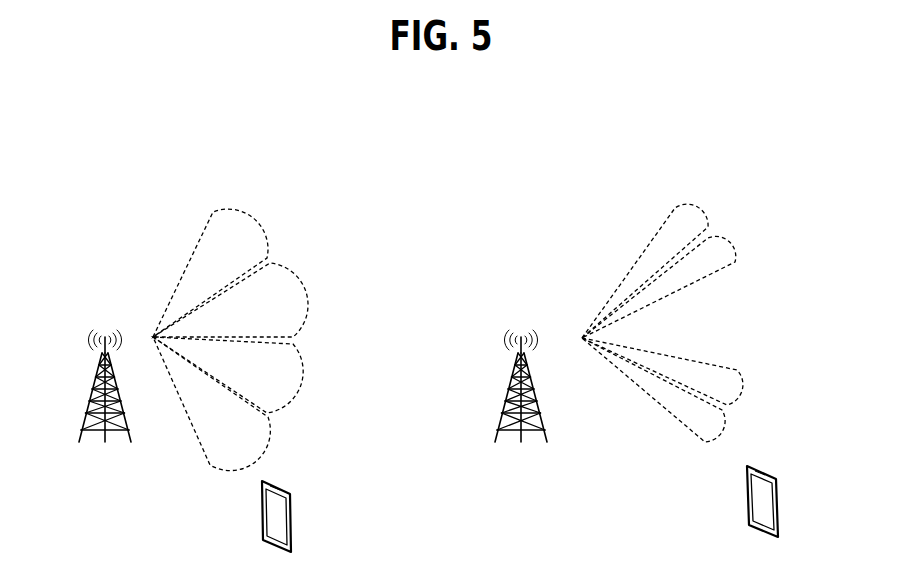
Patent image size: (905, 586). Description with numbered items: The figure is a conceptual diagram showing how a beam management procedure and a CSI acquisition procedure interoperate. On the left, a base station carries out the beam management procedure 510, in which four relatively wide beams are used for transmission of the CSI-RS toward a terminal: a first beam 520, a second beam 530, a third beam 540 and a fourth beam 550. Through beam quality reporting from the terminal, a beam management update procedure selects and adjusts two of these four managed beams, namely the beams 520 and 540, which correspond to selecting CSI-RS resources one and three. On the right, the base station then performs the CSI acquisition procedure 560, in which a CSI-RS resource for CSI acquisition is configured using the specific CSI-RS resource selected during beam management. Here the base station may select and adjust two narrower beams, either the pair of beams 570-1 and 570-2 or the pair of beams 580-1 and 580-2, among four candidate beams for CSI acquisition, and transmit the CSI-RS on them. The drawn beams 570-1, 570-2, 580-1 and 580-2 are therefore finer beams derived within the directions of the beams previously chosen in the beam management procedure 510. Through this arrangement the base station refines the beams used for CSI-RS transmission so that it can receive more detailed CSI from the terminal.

The beam management procedure 510 is at (38, 158).
The first beam 520 is at (247, 227).
The second beam 530 is at (292, 295).
The third beam 540 is at (292, 383).
The fourth beam 550 is at (257, 448).
The CSI acquisition procedure 560 is at (783, 157).
The first CSI acquisition beam 570-1 is at (702, 208).
The second CSI acquisition beam 570-2 is at (730, 243).
The third CSI acquisition beam 580-1 is at (747, 387).
The fourth CSI acquisition beam 580-2 is at (730, 432).